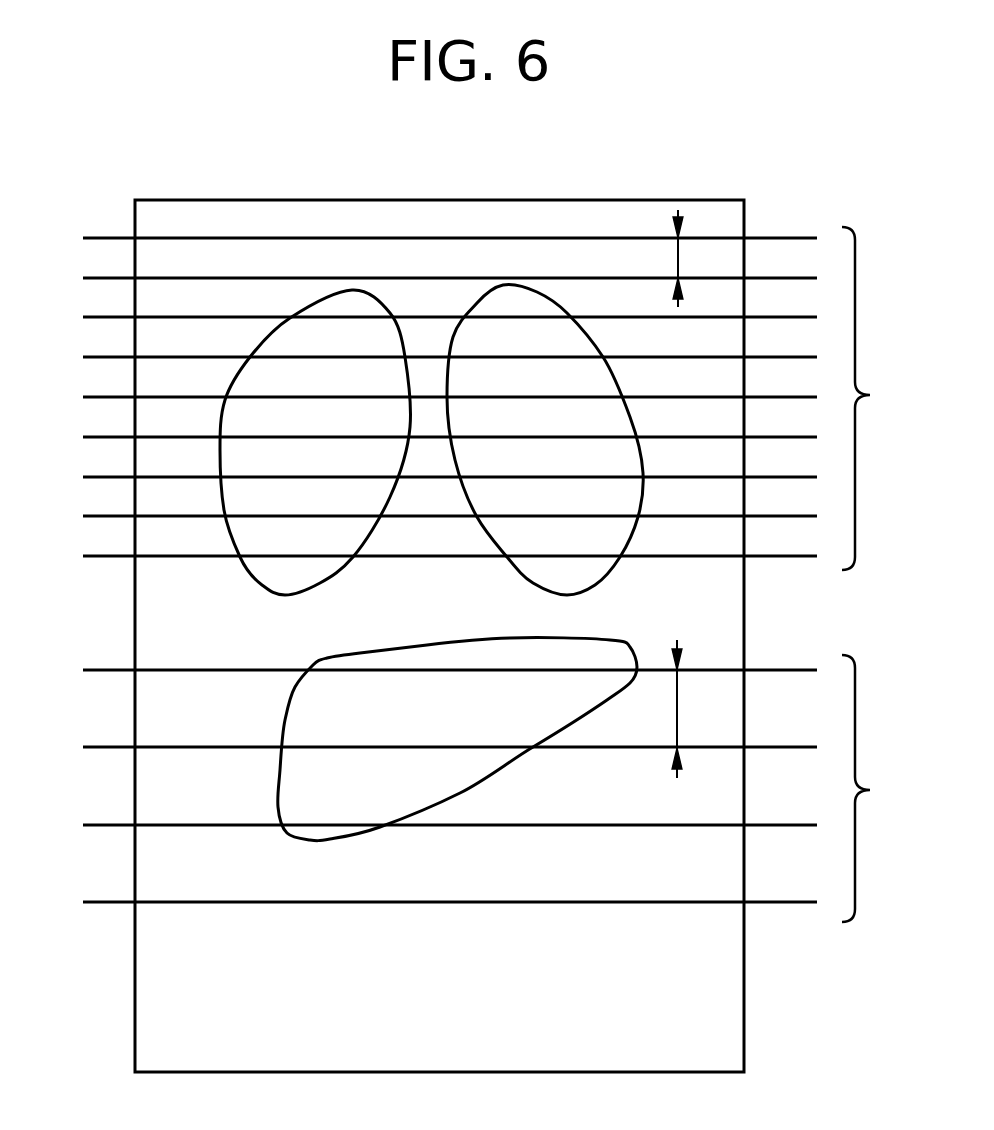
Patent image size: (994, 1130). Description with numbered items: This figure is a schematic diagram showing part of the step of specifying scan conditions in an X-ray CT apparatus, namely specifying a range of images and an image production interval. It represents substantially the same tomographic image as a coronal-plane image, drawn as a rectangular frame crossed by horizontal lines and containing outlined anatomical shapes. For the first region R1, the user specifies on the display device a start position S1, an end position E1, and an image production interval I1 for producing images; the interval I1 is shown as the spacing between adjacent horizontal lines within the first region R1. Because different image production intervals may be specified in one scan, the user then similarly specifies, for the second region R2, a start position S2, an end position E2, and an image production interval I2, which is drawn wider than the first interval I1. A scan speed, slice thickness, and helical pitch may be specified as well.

The start position S1 is at (431, 234).
The end position E1 is at (431, 550).
The start position S2 is at (431, 666).
The end position E2 is at (431, 896).
The image production interval I1 is at (678, 258).
The image production interval I2 is at (677, 708).
The first region R1 is at (880, 398).
The second region R2 is at (880, 788).